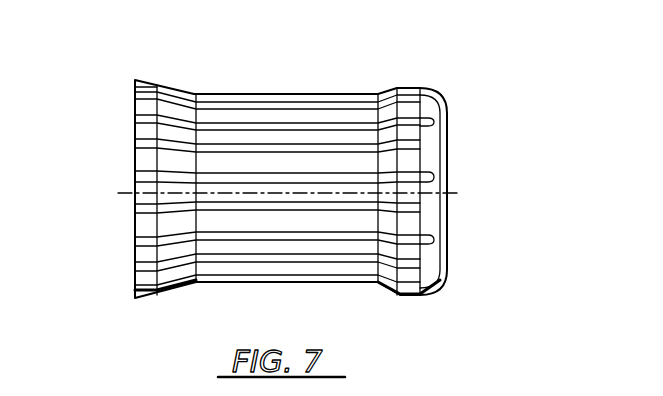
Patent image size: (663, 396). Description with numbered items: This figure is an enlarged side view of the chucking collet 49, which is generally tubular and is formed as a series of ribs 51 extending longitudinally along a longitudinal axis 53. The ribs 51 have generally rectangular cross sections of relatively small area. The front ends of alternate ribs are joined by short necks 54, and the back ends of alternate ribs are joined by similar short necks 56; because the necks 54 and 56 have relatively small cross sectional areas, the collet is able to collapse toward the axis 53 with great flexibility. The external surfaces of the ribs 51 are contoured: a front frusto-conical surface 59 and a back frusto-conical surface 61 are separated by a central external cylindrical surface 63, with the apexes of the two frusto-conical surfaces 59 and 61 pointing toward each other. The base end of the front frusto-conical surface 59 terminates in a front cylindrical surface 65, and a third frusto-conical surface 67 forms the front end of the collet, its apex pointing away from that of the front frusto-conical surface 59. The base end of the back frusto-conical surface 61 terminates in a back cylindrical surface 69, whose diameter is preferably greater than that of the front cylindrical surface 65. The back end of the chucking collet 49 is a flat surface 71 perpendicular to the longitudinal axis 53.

The chucking collet 49 is at (182, 81).
The ribs 51 is at (292, 160).
The longitudinal axis 53 is at (440, 193).
The short necks 54 is at (440, 243).
The short necks 56 is at (137, 140).
The front frusto-conical surface 59 is at (386, 92).
The back frusto-conical surface 61 is at (181, 293).
The central external cylindrical surface 63 is at (240, 94).
The front cylindrical surface 65 is at (413, 297).
The third frusto-conical surface 67 is at (433, 99).
The back cylindrical surface 69 is at (145, 305).
The flat surface 71 is at (137, 250).